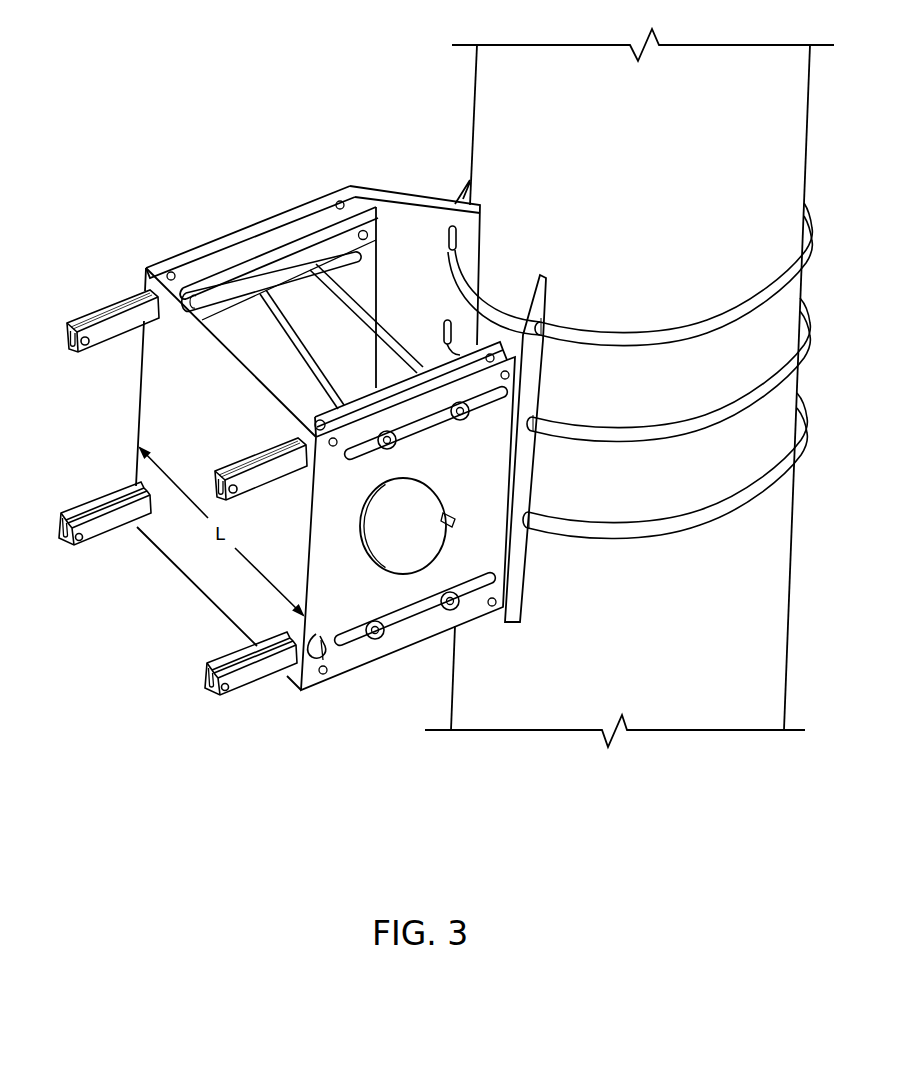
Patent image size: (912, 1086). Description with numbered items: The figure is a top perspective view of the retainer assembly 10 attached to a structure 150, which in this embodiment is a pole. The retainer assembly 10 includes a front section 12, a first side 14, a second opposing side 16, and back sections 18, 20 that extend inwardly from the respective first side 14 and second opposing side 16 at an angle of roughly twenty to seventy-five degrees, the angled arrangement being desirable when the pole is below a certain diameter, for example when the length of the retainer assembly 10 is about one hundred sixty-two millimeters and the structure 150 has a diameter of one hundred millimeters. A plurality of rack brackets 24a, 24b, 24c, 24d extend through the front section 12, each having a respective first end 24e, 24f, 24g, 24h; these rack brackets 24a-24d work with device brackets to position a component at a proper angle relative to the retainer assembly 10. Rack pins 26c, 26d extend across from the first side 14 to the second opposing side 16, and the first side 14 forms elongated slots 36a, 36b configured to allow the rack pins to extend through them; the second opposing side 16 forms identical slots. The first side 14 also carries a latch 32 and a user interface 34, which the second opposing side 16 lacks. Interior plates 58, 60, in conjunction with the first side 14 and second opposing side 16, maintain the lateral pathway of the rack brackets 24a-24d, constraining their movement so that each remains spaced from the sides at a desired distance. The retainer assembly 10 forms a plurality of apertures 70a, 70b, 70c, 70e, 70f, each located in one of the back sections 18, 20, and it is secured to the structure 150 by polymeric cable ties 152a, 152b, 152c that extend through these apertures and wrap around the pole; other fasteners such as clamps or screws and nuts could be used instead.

The retainer assembly 10 is at (123, 663).
The front section 12 is at (200, 408).
The first side 14 is at (488, 561).
The second opposing side 16 is at (283, 207).
The back section 18 is at (521, 460).
The back section 20 is at (428, 246).
The rack bracket 24a is at (248, 694).
The rack bracket 24b is at (276, 489).
The rack bracket 24c is at (102, 350).
The rack bracket 24d is at (102, 545).
The first end 24e is at (206, 692).
The first end 24f is at (216, 479).
The first end 24g is at (69, 330).
The first end 24h is at (62, 515).
The rack pin 26c is at (292, 330).
The rack pin 26d is at (374, 319).
The latch 32 is at (313, 634).
The user interface 34 is at (415, 538).
The elongated slot 36a is at (417, 623).
The elongated slot 36b is at (415, 433).
The interior plate 58 is at (314, 403).
The interior plate 60 is at (322, 320).
The aperture 70a is at (530, 513).
The aperture 70b is at (534, 416).
The aperture 70c is at (549, 300).
The aperture 70e is at (452, 333).
The aperture 70f is at (458, 238).
The structure 150 is at (795, 632).
The cable tie 152a is at (738, 518).
The cable tie 152b is at (752, 412).
The cable tie 152c is at (752, 318).